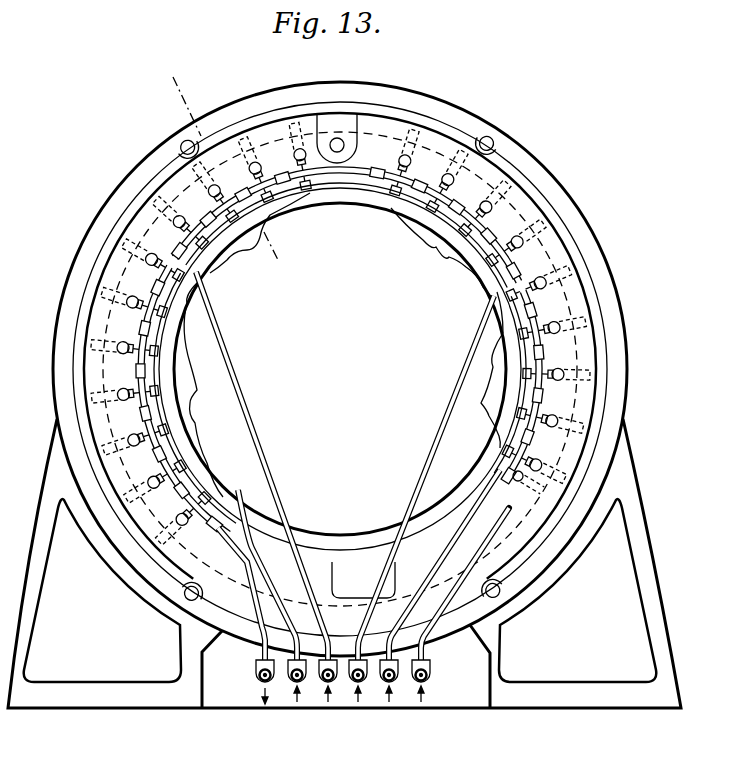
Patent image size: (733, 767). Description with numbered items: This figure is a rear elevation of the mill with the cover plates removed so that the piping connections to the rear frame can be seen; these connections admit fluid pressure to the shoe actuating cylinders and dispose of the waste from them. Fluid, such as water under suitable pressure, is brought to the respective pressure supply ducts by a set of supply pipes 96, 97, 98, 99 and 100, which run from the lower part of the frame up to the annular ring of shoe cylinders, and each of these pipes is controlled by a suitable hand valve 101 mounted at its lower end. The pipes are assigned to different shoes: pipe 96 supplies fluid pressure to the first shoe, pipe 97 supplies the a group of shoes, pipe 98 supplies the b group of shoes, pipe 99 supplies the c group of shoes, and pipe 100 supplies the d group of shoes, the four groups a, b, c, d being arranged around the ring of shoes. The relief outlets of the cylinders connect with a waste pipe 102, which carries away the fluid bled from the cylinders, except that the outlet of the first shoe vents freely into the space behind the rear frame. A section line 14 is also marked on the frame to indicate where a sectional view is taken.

The section line 14- 14 is at (171, 72).
The supply pipe 96 is at (492, 531).
The supply pipe 97 is at (461, 526).
The supply pipe 98 is at (443, 432).
The supply pipe 99 is at (233, 375).
The supply pipe 100 is at (247, 530).
The hand valve 101 is at (350, 684).
The waste pipe 102 is at (258, 623).
The a group of shoes a is at (487, 370).
The b group of shoes b is at (442, 254).
The c group of shoes c is at (260, 233).
The d group of shoes d is at (203, 390).